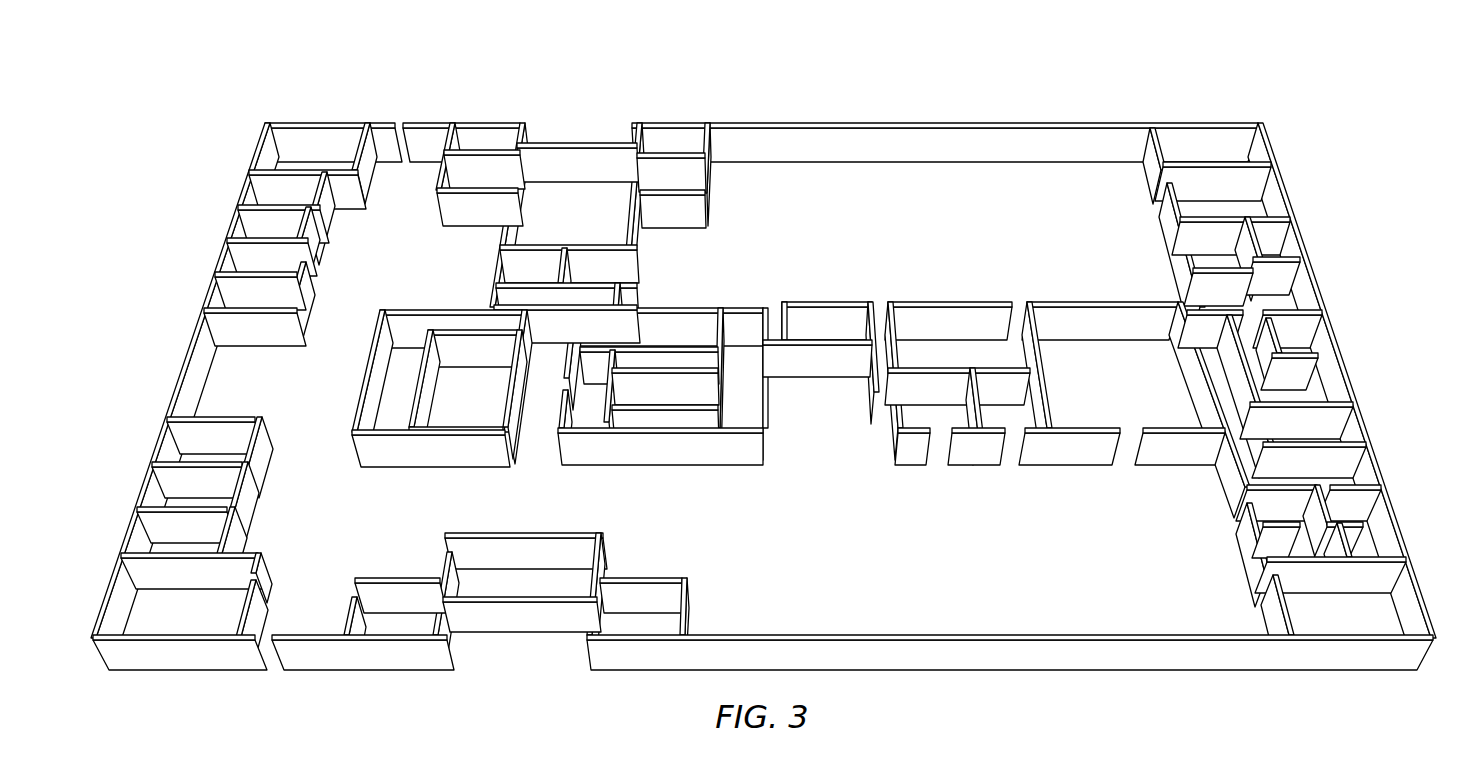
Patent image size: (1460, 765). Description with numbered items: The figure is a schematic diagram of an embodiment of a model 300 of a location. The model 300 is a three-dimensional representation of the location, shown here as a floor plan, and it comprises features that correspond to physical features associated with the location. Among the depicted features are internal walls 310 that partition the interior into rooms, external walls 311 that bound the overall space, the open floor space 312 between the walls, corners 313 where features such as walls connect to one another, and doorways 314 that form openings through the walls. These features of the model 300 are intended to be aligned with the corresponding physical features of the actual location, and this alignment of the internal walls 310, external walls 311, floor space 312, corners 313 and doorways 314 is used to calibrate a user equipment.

The model 300 is at (488, 65).
The internal walls 310 is at (648, 455).
The external walls 311 is at (888, 157).
The floor space 312 is at (822, 549).
The corners 313 is at (1145, 166).
The doorways 314 is at (1126, 466).